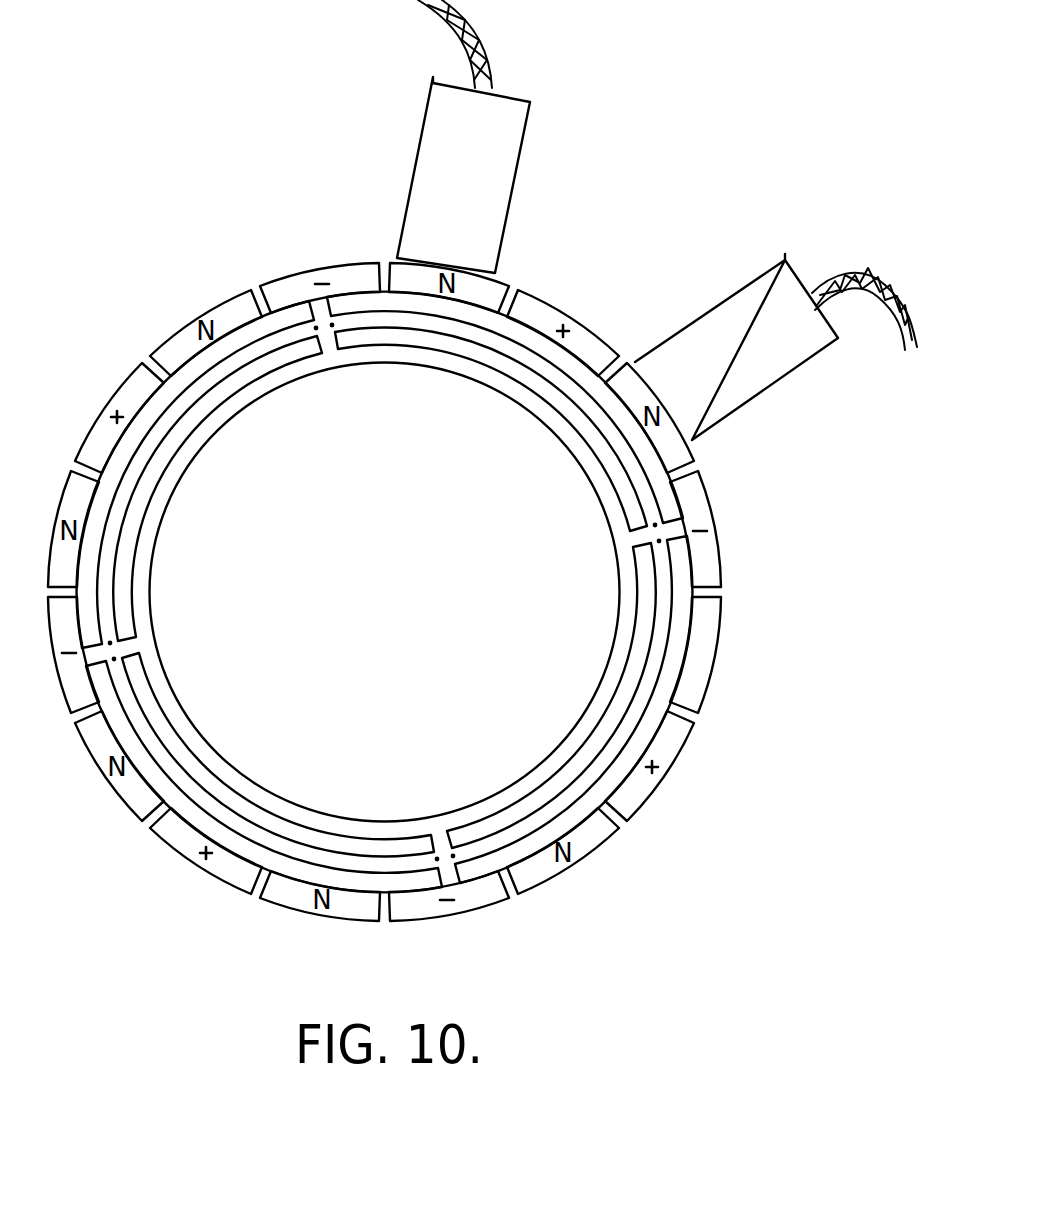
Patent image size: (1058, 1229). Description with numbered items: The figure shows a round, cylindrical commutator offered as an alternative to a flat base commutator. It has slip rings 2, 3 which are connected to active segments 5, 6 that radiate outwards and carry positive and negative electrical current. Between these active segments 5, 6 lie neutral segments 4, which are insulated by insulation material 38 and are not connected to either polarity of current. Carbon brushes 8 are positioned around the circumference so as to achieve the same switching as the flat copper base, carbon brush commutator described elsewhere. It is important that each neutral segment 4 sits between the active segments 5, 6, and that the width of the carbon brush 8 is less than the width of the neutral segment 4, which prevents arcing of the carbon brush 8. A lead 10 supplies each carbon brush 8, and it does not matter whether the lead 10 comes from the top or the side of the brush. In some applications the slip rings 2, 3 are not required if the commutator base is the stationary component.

The slip ring 2 is at (548, 807).
The slip ring 3 is at (467, 810).
The neutral segment 4 is at (703, 657).
The segment 5 is at (692, 498).
The segment 6 is at (672, 733).
The carbon brush 8 is at (697, 357).
The lead 10 is at (483, 32).
The insulation material 38 is at (570, 608).